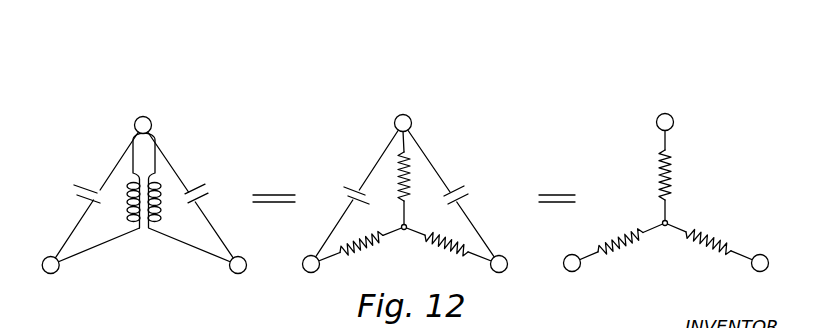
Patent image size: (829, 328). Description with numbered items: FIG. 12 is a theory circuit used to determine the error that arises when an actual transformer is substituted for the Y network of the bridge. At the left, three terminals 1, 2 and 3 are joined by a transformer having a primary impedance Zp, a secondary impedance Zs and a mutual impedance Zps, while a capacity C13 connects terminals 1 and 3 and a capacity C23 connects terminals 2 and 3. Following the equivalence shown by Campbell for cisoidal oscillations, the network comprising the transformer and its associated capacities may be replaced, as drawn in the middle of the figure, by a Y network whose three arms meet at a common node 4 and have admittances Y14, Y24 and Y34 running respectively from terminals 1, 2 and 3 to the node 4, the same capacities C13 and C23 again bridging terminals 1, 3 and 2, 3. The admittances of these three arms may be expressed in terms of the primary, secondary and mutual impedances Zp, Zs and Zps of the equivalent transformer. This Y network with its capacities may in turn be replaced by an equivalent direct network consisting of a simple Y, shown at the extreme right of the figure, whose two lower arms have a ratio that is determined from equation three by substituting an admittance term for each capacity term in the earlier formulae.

The terminal 1 is at (311, 264).
The terminal 2 is at (499, 264).
The terminal 3 is at (404, 124).
The common node of Y network 4 is at (532, 232).
The capacity C13 is at (219, 186).
The capacity C23 is at (330, 186).
The primary impedance Zp is at (123, 202).
The secondary impedance Zs is at (162, 202).
The mutual impedance Zps is at (167, 216).
The admittance of Y network arm Y34 is at (416, 178).
The admittance of Y network arm Y14 is at (357, 248).
The admittance of Y network arm Y24 is at (451, 248).